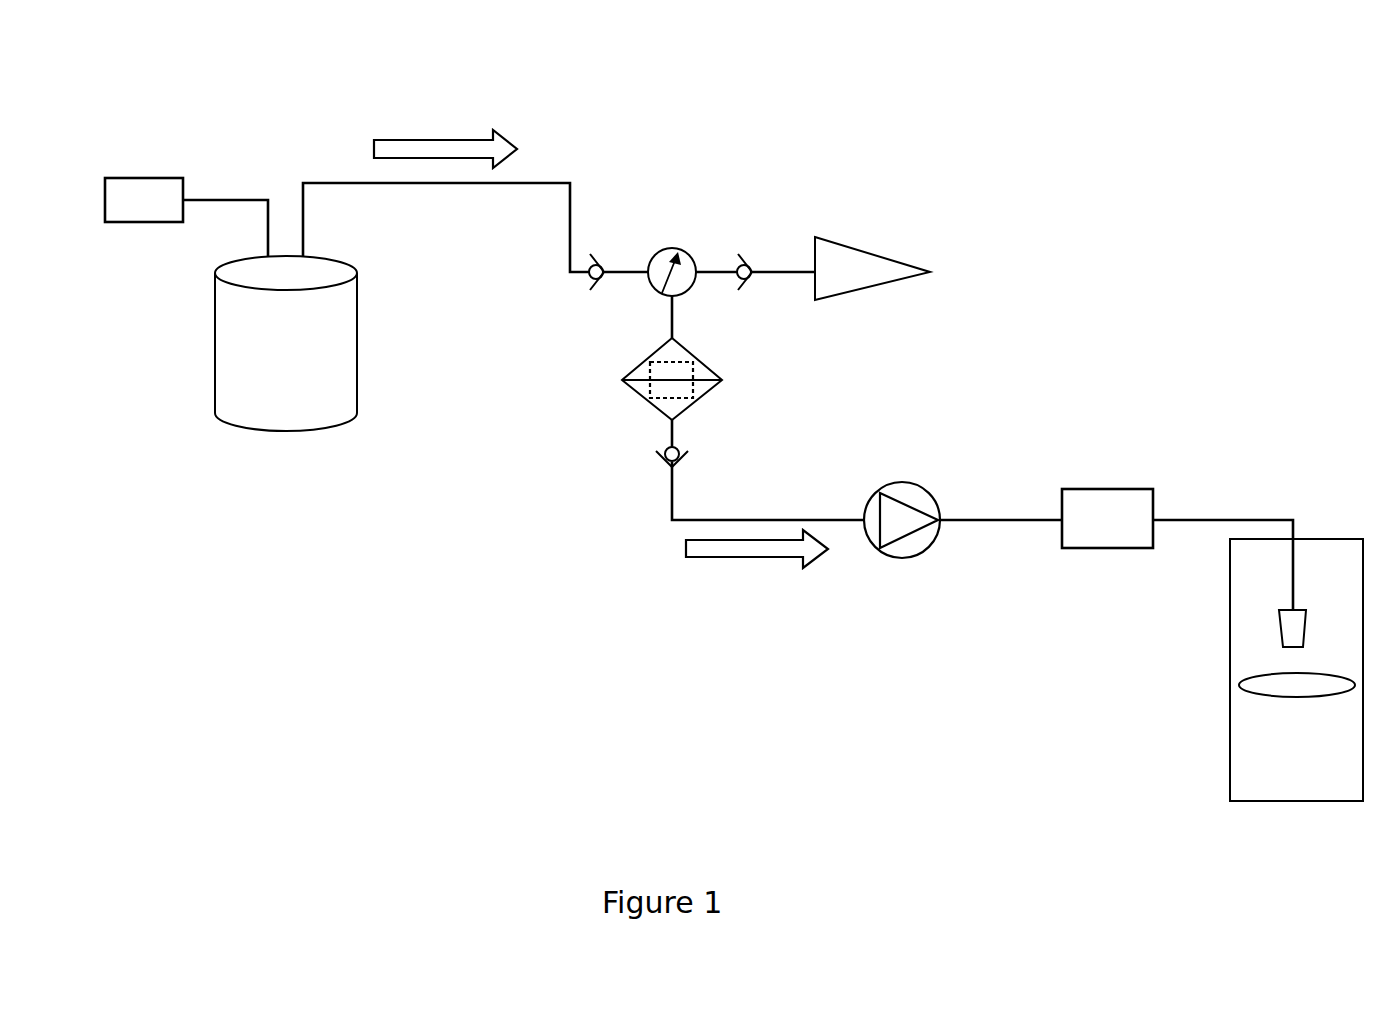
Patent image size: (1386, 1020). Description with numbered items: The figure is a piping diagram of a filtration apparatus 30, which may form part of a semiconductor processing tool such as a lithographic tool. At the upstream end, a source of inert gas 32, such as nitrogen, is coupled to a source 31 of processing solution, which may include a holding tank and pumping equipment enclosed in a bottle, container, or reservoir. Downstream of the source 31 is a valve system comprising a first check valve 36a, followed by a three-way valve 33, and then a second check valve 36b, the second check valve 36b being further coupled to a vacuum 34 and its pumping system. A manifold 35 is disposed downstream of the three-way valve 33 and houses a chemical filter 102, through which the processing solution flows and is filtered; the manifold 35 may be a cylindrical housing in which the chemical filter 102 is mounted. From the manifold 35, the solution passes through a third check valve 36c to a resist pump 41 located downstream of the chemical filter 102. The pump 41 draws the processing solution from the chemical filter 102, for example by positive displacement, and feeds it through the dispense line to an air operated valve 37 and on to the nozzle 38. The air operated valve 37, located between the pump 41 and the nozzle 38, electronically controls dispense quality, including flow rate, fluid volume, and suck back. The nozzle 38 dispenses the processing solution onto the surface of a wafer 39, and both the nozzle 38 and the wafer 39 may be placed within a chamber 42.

The filtration apparatus 30 is at (1056, 28).
The source of processing solution 31 is at (263, 438).
The source of inert gas 32 is at (137, 176).
The three-way valve 33 is at (662, 248).
The vacuum 34 is at (855, 245).
The manifold 35 is at (636, 370).
The first check valve 36a is at (578, 283).
The second check valve 36b is at (735, 250).
The third check valve 36c is at (658, 466).
The air operated valve 37 is at (1115, 483).
The nozzle 38 is at (1279, 637).
The wafer 39 is at (1290, 700).
The resist pump 41 is at (912, 483).
The chamber 42 is at (1230, 730).
The chemical filter 102 is at (699, 364).